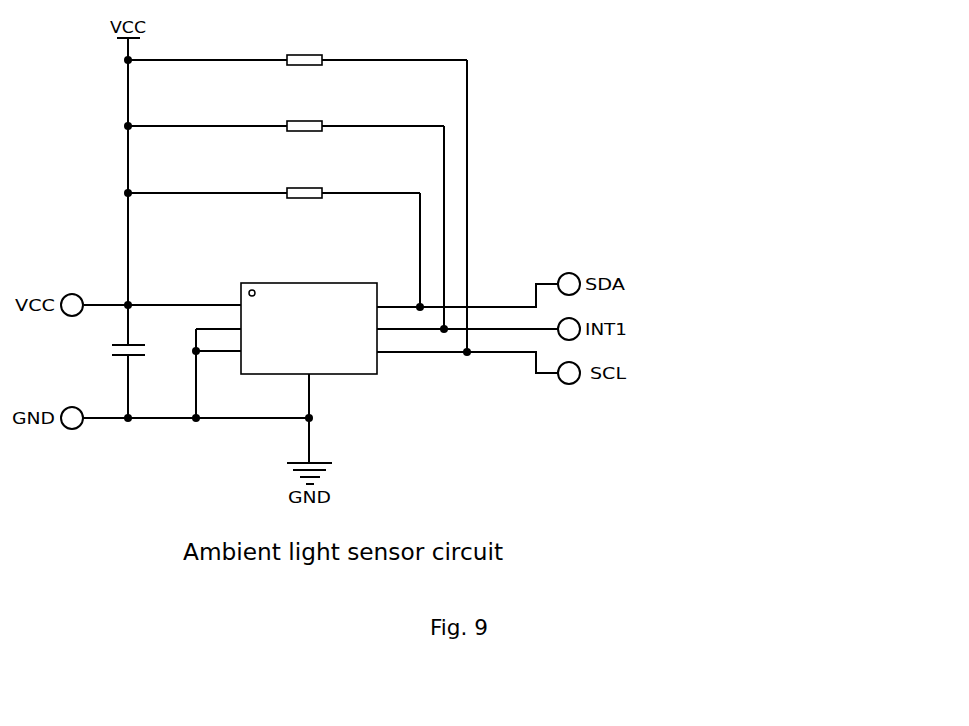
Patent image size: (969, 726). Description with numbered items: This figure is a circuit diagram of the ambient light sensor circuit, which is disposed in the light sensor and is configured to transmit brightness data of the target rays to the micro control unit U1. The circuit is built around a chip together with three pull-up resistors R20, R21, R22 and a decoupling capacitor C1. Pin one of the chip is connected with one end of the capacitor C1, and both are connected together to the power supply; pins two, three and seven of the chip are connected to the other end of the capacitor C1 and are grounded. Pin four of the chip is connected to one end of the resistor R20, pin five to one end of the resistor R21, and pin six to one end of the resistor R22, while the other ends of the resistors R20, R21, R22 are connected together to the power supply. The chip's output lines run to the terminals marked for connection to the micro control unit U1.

The resistor R20 is at (297, 60).
The resistor R21 is at (286, 126).
The resistor R22 is at (274, 193).
The capacitor C1 is at (92, 354).
The ambient light sensor IC / micro control unit connection U1 is at (563, 354).